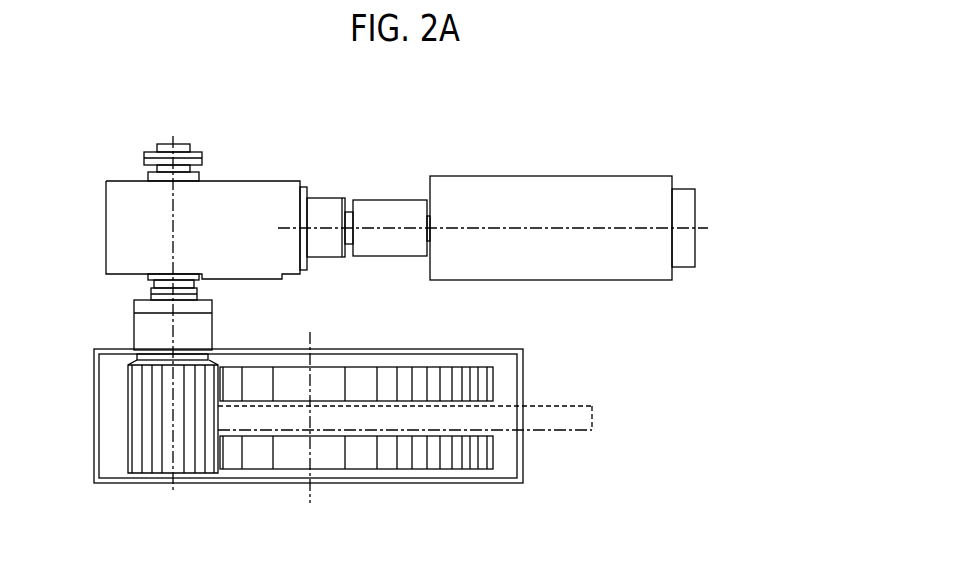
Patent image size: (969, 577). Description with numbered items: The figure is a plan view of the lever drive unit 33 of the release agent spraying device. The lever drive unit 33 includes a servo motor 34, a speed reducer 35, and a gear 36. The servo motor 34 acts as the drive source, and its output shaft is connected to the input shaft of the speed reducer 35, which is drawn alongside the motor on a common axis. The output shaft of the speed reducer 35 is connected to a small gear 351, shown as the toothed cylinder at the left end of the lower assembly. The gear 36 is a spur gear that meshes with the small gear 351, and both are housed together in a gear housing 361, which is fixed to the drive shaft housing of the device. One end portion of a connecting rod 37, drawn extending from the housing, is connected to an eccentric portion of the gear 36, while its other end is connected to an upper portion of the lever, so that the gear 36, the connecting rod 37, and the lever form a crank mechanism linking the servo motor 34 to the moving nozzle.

The lever drive unit 33 is at (641, 318).
The servo motor 34 is at (537, 176).
The speed reducer 35 is at (248, 182).
The gear 36 is at (358, 459).
The connecting rod 37 is at (550, 430).
The small gear 351 is at (128, 421).
The gear housing 361 is at (262, 483).